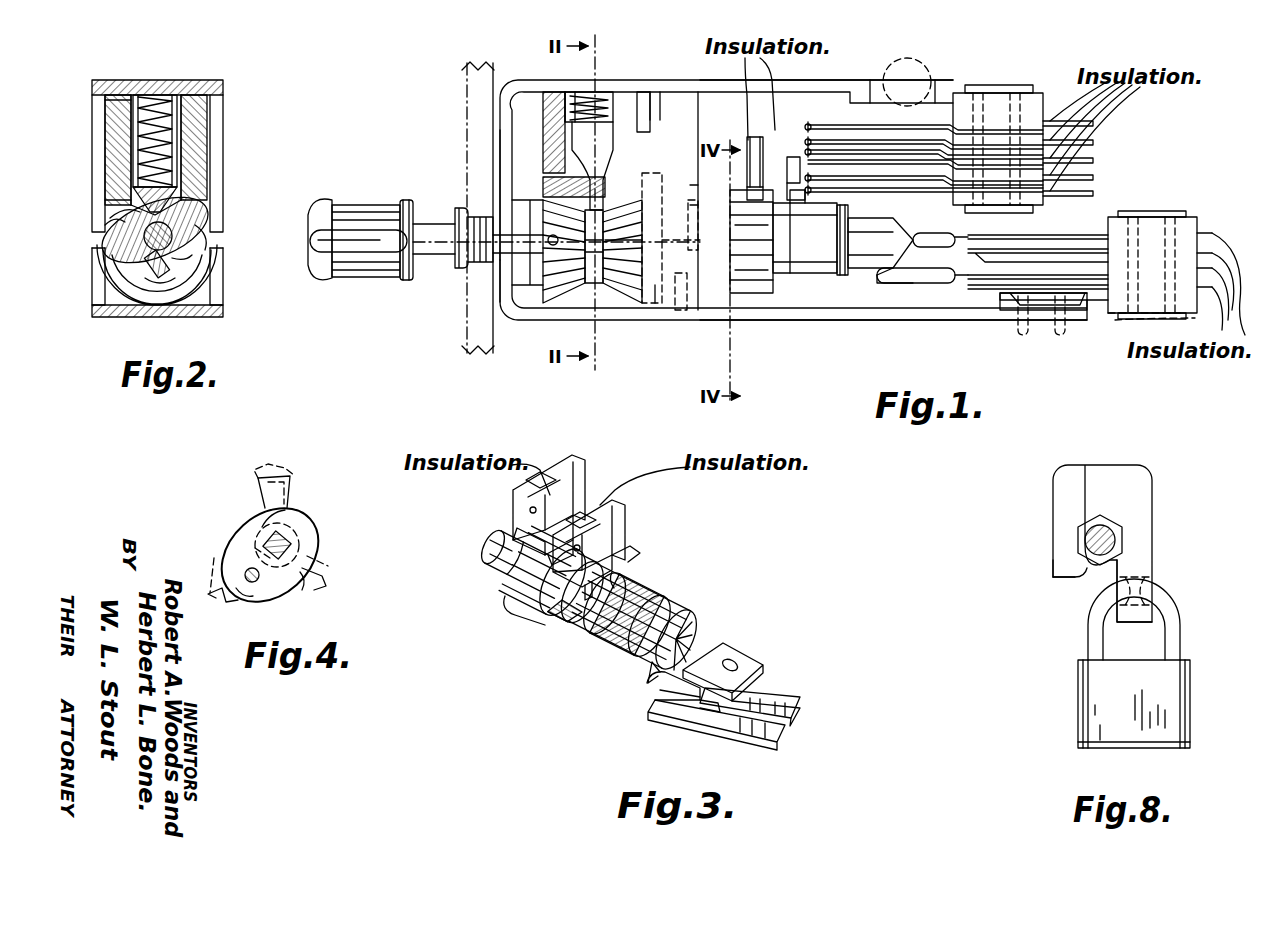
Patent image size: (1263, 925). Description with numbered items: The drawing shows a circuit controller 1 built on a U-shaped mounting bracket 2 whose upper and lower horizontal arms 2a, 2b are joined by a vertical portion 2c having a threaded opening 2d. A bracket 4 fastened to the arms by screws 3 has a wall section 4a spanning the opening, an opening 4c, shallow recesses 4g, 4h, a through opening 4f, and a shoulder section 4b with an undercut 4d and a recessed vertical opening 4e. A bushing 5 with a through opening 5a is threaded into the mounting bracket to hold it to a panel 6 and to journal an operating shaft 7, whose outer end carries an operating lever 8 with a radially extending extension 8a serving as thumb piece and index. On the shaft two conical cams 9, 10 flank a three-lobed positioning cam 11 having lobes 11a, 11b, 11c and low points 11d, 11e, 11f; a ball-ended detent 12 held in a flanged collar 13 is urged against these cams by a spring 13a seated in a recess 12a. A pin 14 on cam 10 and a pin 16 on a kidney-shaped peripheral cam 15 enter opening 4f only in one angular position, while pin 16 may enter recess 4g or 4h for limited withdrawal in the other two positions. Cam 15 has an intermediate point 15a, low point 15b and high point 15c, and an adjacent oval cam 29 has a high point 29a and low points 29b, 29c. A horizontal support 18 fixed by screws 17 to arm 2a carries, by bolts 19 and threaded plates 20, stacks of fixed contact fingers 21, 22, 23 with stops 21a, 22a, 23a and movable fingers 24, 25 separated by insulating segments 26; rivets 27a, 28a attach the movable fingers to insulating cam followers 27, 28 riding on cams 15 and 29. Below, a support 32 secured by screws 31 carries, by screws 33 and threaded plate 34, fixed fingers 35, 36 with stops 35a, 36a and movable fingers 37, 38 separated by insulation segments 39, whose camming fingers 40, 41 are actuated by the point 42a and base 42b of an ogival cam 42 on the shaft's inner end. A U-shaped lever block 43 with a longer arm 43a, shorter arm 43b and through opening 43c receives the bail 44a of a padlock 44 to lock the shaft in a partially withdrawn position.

In FIG. 1, the circuit controller 1 is at (445, 95).
In FIG. 1, the U-shaped mounting bracket 2 is at (660, 82).
In FIG. 2, the upper horizontal arm 2a is at (195, 80).
In FIG. 1, the upper horizontal arm 2a is at (833, 82).
In FIG. 2, the lower horizontal arm 2b is at (185, 312).
In FIG. 1, the lower horizontal arm 2b is at (792, 320).
In FIG. 1, the vertical portion 2c is at (500, 163).
In FIG. 1, the threaded opening 2d is at (495, 306).
In FIG. 1, the screws 3 is at (656, 90).
In FIG. 2, the bracket 4 is at (205, 100).
In FIG. 1, the bracket 4 is at (699, 120).
In FIG. 1, the wall section 4a is at (699, 186).
In FIG. 2, the shoulder section 4b is at (200, 125).
In FIG. 1, the shoulder section 4b is at (641, 94).
In FIG. 1, the opening 4c is at (696, 226).
In FIG. 2, the undercut 4d is at (112, 200).
In FIG. 1, the undercut 4d is at (655, 180).
In FIG. 2, the recessed vertical opening 4e is at (112, 115).
In FIG. 1, the recessed vertical opening 4e is at (552, 128).
In FIG. 1, the through opening 4f is at (676, 300).
In FIG. 1, the shallow recess 4g is at (682, 310).
In FIG. 1, the shallow recess 4h is at (699, 206).
In FIG. 1, the bushing 5 is at (460, 268).
In FIG. 8, the bushing 5 is at (1095, 562).
In FIG. 1, the through opening 5a is at (480, 225).
In FIG. 1, the panel 6 is at (475, 332).
In FIG. 2, the operating shaft 7 is at (145, 238).
In FIG. 1, the operating shaft 7 is at (498, 255).
In FIG. 3, the operating shaft 7 is at (492, 538).
In FIG. 8, the operating shaft 7 is at (1080, 538).
In FIG. 1, the operating lever 8 is at (350, 270).
In FIG. 2, the radially extending extension 8a is at (215, 235).
In FIG. 2, the conical cam 9 is at (195, 265).
In FIG. 1, the conical cam 9 is at (520, 258).
In FIG. 1, the conical cam 10 is at (632, 296).
In FIG. 2, the positioning cam 11 is at (195, 215).
In FIG. 1, the positioning cam 11 is at (575, 300).
In FIG. 2, the lobe 11a is at (115, 222).
In FIG. 2, the lobe 11b is at (208, 235).
In FIG. 2, the lobe 11c is at (160, 300).
In FIG. 2, the low point 11d is at (185, 205).
In FIG. 1, the low point 11d is at (560, 186).
In FIG. 2, the low point 11e is at (190, 255).
In FIG. 2, the low point 11f is at (148, 262).
In FIG. 2, the ball-ended detent 12 is at (145, 205).
In FIG. 1, the ball-ended detent 12 is at (598, 178).
In FIG. 2, the recess 12a is at (140, 150).
In FIG. 2, the flanged collar 13 is at (135, 95).
In FIG. 1, the flanged collar 13 is at (560, 92).
In FIG. 2, the spring 13a is at (160, 97).
In FIG. 1, the spring 13a is at (578, 92).
In FIG. 1, the pin 14 is at (648, 292).
In FIG. 1, the peripheral cam 15 is at (752, 295).
In FIG. 4, the peripheral cam 15 is at (300, 530).
In FIG. 3, the peripheral cam 15 is at (515, 575).
In FIG. 1, the intermediate point 15a is at (740, 150).
In FIG. 4, the intermediate point 15a is at (268, 515).
In FIG. 4, the low point 15b is at (302, 578).
In FIG. 3, the low point 15b is at (520, 608).
In FIG. 4, the high point 15c is at (240, 590).
In FIG. 1, the pin 16 is at (748, 293).
In FIG. 4, the pin 16 is at (258, 582).
In FIG. 1, the screws 17 is at (907, 78).
In FIG. 1, the horizontal support 18 is at (925, 75).
In FIG. 1, the bolts 19 is at (1022, 93).
In FIG. 1, the threaded plates 20 is at (1030, 213).
In FIG. 1, the fixed contact finger 21 is at (838, 122).
In FIG. 1, the stop 21a is at (920, 150).
In FIG. 1, the fixed contact finger 22 is at (870, 176).
In FIG. 1, the stop 22a is at (870, 138).
In FIG. 1, the fixed contact finger 23 is at (878, 190).
In FIG. 1, the stop 23a is at (950, 235).
In FIG. 1, the movable contact finger 24 is at (758, 138).
In FIG. 3, the movable contact finger 24 is at (580, 490).
In FIG. 1, the movable contact finger 25 is at (835, 210).
In FIG. 3, the movable contact finger 25 is at (594, 587).
In FIG. 1, the insulating segments 26 is at (1005, 208).
In FIG. 1, the cam follower 27 is at (762, 170).
In FIG. 4, the cam follower 27 is at (290, 488).
In FIG. 3, the cam follower 27 is at (520, 552).
In FIG. 3, the rivets 27a is at (518, 514).
In FIG. 1, the cam follower 28 is at (795, 183).
In FIG. 4, the cam follower 28 is at (290, 470).
In FIG. 3, the cam follower 28 is at (634, 554).
In FIG. 3, the rivets 28a is at (625, 527).
In FIG. 1, the cam 29 is at (788, 273).
In FIG. 4, the cam 29 is at (290, 543).
In FIG. 3, the cam 29 is at (565, 618).
In FIG. 1, the high point 29a is at (805, 178).
In FIG. 3, the high point 29a is at (622, 584).
In FIG. 4, the low point 29b is at (300, 554).
In FIG. 4, the low point 29c is at (255, 548).
In FIG. 1, the screws 31 is at (1024, 332).
In FIG. 1, the support 32 is at (1062, 332).
In FIG. 1, the screws 33 is at (1130, 318).
In FIG. 1, the threaded plate 34 is at (1190, 217).
In FIG. 1, the fixed spring contact finger 35 is at (1010, 254).
In FIG. 1, the stop 35a is at (1072, 237).
In FIG. 1, the fixed spring contact finger 36 is at (975, 286).
In FIG. 1, the stop 36a is at (1012, 300).
In FIG. 1, the movable spring contact finger 37 is at (958, 238).
In FIG. 3, the movable spring contact finger 37 is at (790, 698).
In FIG. 1, the movable spring contact finger 38 is at (958, 275).
In FIG. 3, the movable spring contact finger 38 is at (745, 738).
In FIG. 1, the insulation segments 39 is at (1158, 230).
In FIG. 1, the camming finger 40 is at (900, 226).
In FIG. 3, the camming finger 40 is at (725, 648).
In FIG. 1, the camming finger 41 is at (893, 283).
In FIG. 3, the camming finger 41 is at (668, 703).
In FIG. 1, the ogival shaped cam 42 is at (845, 230).
In FIG. 3, the ogival shaped cam 42 is at (630, 645).
In FIG. 1, the point 42a is at (898, 270).
In FIG. 3, the point 42a is at (660, 680).
In FIG. 1, the base 42b is at (843, 275).
In FIG. 3, the base 42b is at (650, 612).
In FIG. 8, the lever block 43 is at (1140, 523).
In FIG. 8, the arm 43a is at (1140, 558).
In FIG. 8, the arm 43b is at (1058, 563).
In FIG. 8, the through opening 43c is at (1150, 582).
In FIG. 8, the padlock 44 is at (1178, 675).
In FIG. 8, the bail 44a is at (1092, 641).